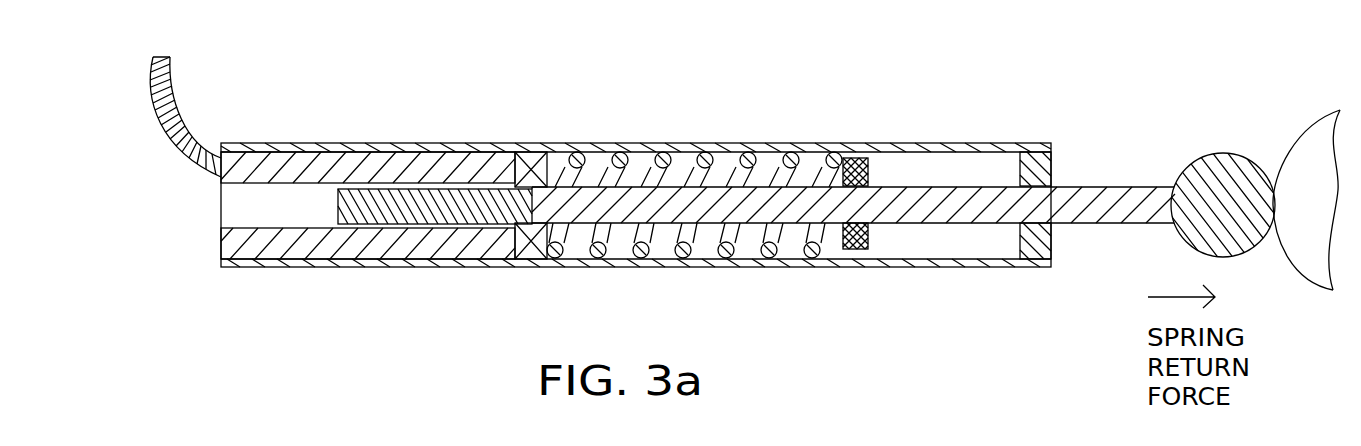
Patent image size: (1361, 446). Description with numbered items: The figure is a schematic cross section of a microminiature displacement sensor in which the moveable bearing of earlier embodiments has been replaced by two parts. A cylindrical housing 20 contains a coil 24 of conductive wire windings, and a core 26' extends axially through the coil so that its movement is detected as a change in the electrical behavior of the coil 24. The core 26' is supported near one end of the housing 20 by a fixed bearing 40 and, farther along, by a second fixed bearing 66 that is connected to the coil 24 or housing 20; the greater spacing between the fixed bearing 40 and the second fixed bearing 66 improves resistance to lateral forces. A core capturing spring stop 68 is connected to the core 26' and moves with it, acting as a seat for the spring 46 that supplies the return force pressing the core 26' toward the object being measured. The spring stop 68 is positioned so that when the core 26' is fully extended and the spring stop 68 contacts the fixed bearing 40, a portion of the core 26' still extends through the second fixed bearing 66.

The cylindrical housing 20 is at (403, 143).
The coil 24 is at (295, 158).
The second fixed bearing 66 is at (530, 170).
The core 26' is at (831, 228).
The spring 46 is at (752, 152).
The core capturing spring stop 68 is at (868, 160).
The fixed bearing 40 is at (1048, 162).